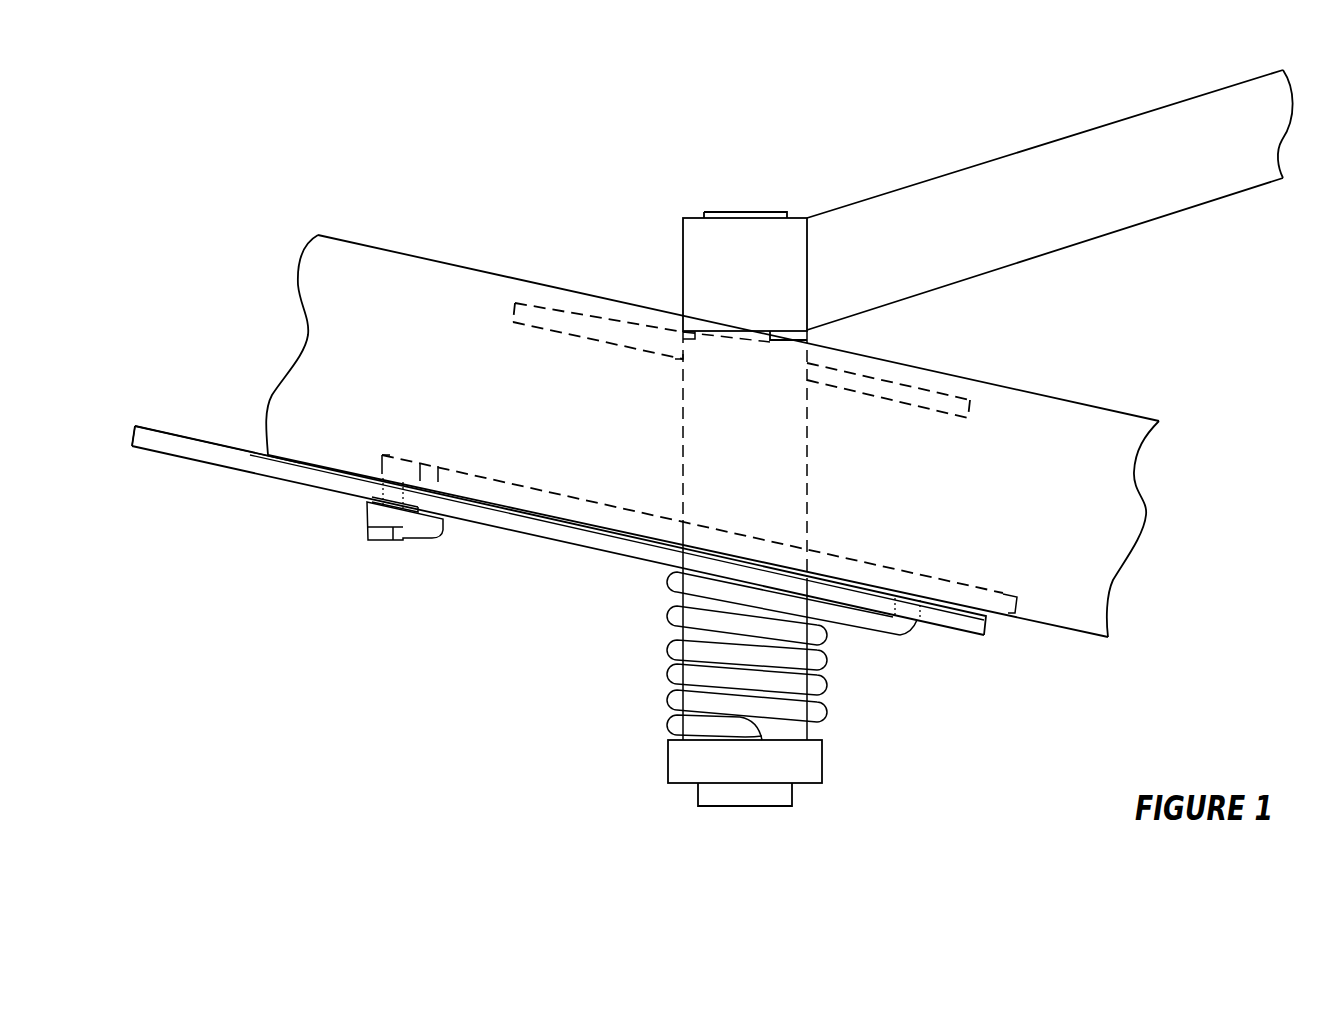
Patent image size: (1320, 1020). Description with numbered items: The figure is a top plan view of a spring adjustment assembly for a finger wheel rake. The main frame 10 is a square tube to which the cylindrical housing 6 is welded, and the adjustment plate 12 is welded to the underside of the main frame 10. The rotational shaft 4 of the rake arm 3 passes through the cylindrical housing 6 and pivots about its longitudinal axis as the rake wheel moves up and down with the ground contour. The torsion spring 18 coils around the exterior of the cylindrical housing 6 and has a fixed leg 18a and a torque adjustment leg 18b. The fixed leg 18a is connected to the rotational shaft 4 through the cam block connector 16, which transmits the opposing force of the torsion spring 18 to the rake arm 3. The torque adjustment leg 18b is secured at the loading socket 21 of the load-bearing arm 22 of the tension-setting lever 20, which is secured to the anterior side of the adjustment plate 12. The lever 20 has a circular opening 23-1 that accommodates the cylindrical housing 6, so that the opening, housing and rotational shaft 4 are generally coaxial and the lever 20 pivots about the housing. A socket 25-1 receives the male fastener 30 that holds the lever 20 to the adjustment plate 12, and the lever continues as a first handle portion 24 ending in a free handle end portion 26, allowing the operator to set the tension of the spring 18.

The rake arm 3 is at (994, 232).
The rotational shaft 4 is at (750, 212).
The cylindrical housing 6 is at (746, 280).
The main frame 10 is at (503, 272).
The adjustment plate 12 is at (488, 490).
The cam block connector 16 is at (766, 775).
The torsion spring 18 is at (670, 676).
The fixed leg 18a is at (762, 736).
The torque adjustment leg 18b is at (917, 620).
The tension-setting lever 20 is at (182, 433).
The loading socket 21 is at (918, 622).
The load-bearing arm 22 is at (973, 620).
The circular opening 23-1 is at (698, 556).
The first handle portion 24 is at (532, 535).
The socket 25-1 is at (387, 492).
The handle end portion 26 is at (218, 466).
The male fastener 30 is at (382, 548).